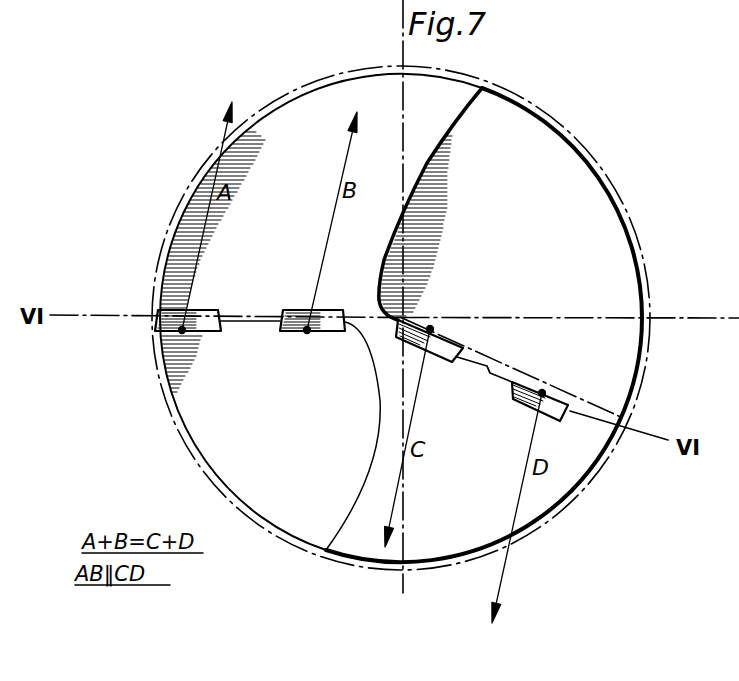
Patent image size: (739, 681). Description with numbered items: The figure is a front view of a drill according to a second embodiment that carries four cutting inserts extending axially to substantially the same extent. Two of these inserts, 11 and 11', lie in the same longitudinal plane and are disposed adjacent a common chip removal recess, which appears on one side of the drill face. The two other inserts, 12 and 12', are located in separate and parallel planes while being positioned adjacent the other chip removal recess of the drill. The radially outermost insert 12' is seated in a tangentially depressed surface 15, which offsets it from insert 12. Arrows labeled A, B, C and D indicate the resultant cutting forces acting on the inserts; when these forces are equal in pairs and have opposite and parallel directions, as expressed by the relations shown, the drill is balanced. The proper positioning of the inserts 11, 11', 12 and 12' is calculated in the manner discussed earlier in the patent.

The insert 11 is at (196, 345).
The insert 11' is at (312, 345).
The insert 12 is at (429, 324).
The radially outermost insert 12' is at (540, 382).
The tangentially depressed surface 15 is at (498, 375).